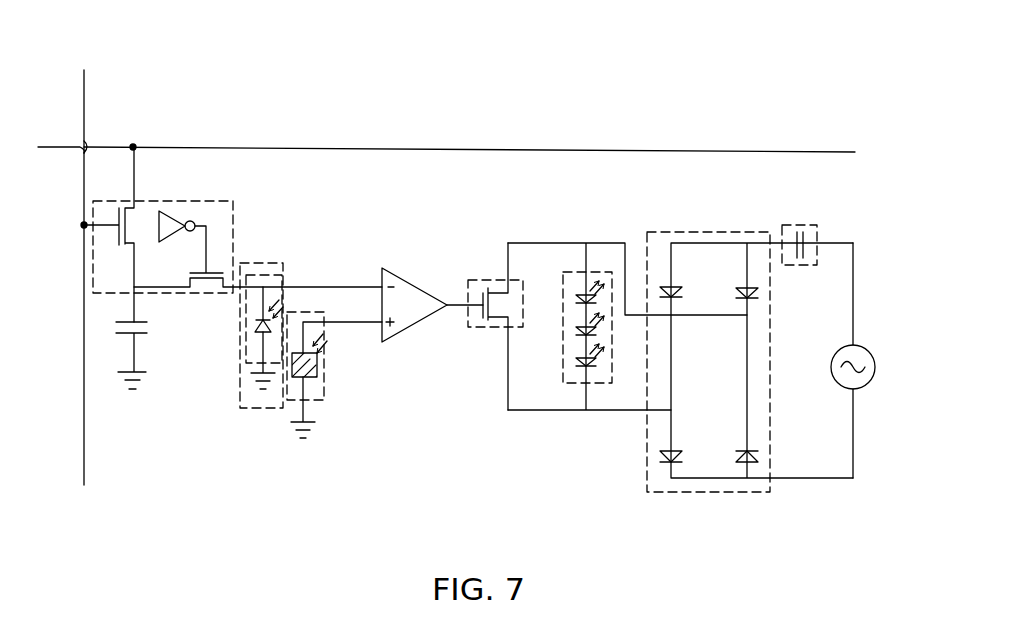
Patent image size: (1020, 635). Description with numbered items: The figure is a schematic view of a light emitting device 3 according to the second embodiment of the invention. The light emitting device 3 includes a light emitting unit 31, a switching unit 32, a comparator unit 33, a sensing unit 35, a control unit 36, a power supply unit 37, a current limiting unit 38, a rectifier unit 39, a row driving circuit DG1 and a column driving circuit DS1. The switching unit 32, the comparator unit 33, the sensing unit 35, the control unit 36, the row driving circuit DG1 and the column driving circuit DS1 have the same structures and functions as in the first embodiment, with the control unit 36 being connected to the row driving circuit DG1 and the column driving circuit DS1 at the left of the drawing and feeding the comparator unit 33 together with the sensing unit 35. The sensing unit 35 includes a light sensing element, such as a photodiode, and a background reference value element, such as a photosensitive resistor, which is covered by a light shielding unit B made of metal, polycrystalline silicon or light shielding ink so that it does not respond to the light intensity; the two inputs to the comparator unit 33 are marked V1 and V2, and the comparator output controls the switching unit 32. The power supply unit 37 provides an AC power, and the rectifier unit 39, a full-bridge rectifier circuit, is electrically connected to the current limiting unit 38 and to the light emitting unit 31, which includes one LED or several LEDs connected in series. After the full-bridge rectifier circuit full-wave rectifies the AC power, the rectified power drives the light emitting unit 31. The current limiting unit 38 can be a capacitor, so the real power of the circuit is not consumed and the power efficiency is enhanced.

The light emitting device 3 is at (84, 29).
The column driving circuit DS1 is at (48, 146).
The row driving circuit DG1 is at (86, 97).
The control unit 36 is at (218, 201).
The sensing unit 35 is at (285, 272).
The light shielding unit B is at (306, 382).
The first voltage V1 is at (349, 267).
The second voltage V2 is at (349, 302).
The comparator unit 33 is at (409, 280).
The switching unit 32 is at (495, 280).
The light emitting unit 31 is at (562, 357).
The rectifier unit 39 is at (690, 232).
The current limiting unit 38 is at (800, 224).
The power supply unit 37 is at (866, 352).